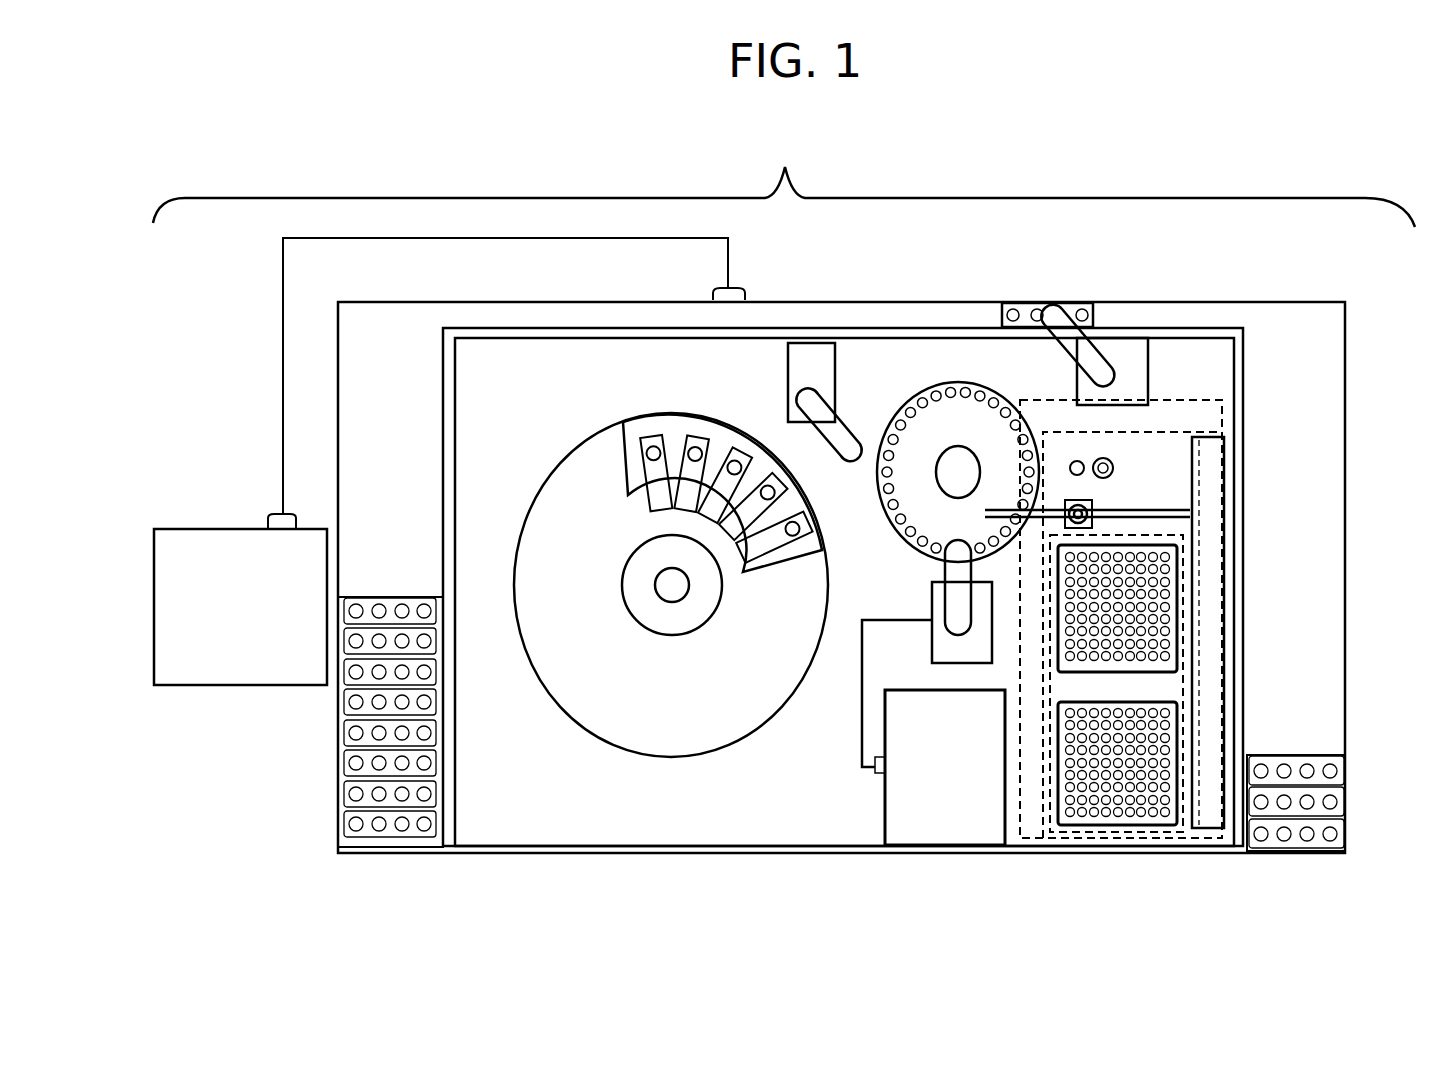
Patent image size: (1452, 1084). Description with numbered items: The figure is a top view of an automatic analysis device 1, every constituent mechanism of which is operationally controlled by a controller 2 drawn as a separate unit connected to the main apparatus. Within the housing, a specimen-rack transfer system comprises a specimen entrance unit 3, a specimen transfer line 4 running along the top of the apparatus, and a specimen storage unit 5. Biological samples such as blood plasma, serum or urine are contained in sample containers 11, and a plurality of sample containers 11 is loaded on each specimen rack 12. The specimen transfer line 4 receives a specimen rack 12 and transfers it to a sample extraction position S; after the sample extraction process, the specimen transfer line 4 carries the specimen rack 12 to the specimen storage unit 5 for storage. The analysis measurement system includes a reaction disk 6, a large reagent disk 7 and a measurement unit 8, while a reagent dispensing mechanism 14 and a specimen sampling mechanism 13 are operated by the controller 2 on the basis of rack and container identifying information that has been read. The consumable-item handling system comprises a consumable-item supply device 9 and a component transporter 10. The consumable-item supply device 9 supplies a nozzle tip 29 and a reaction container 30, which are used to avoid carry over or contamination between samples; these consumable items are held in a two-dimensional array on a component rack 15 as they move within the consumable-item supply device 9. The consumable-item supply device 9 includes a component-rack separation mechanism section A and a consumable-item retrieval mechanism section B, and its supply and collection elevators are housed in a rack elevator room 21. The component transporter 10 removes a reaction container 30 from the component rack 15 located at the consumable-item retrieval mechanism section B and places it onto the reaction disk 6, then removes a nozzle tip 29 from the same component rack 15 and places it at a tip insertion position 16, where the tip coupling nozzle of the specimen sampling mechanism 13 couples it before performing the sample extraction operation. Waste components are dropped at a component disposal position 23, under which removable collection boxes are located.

The automatic analysis device 1 is at (784, 178).
The controller 2 is at (242, 663).
The specimen entrance unit 3 is at (362, 470).
The specimen transfer line 4 is at (907, 323).
The specimen storage unit 5 is at (1342, 739).
The reaction disk 6 is at (966, 378).
The reagent disk 7 is at (723, 440).
The measurement unit 8 is at (918, 820).
The consumable-item supply device 9 is at (1115, 835).
The component transporter 10 is at (1216, 479).
The sample container 11 is at (437, 828).
The specimen rack 12 is at (392, 847).
The specimen sampling mechanism 13 is at (1100, 365).
The reagent dispensing mechanism 14 is at (808, 367).
The component rack 15 is at (1085, 832).
The tip insertion position 16 is at (1079, 460).
The rack elevator room 21 is at (1208, 397).
The component disposal position 23 is at (1112, 455).
The nozzle tip 29 is at (1134, 828).
The reaction container 30 is at (1165, 817).
The sample extraction position S is at (1063, 307).
The component-rack separation mechanism section A is at (1223, 798).
The consumable-item retrieval mechanism section B is at (1173, 589).